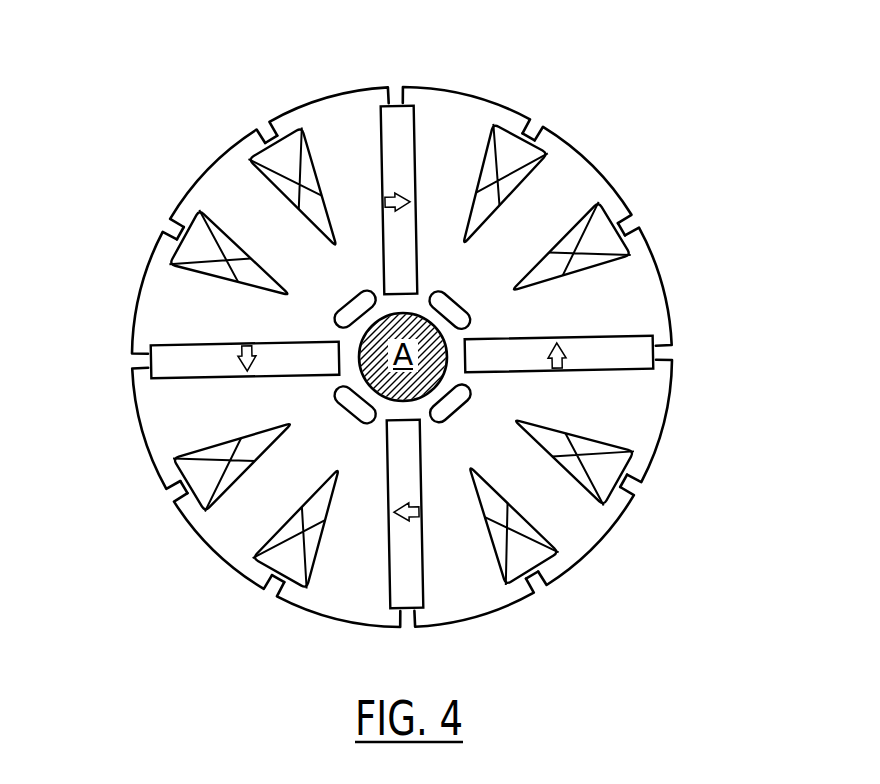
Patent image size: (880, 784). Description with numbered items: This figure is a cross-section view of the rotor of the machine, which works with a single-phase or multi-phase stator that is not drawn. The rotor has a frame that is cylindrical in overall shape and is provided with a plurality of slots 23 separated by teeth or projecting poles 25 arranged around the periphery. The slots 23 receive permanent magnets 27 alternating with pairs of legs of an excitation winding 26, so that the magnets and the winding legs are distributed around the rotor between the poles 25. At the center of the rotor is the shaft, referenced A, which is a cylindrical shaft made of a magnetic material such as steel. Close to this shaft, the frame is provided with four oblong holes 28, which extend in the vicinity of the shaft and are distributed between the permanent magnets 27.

The slots 23 is at (318, 177).
The projecting poles 25 is at (213, 168).
The excitation winding 26 is at (518, 180).
The permanent magnets 27 is at (405, 131).
The oblong holes 28 is at (343, 310).